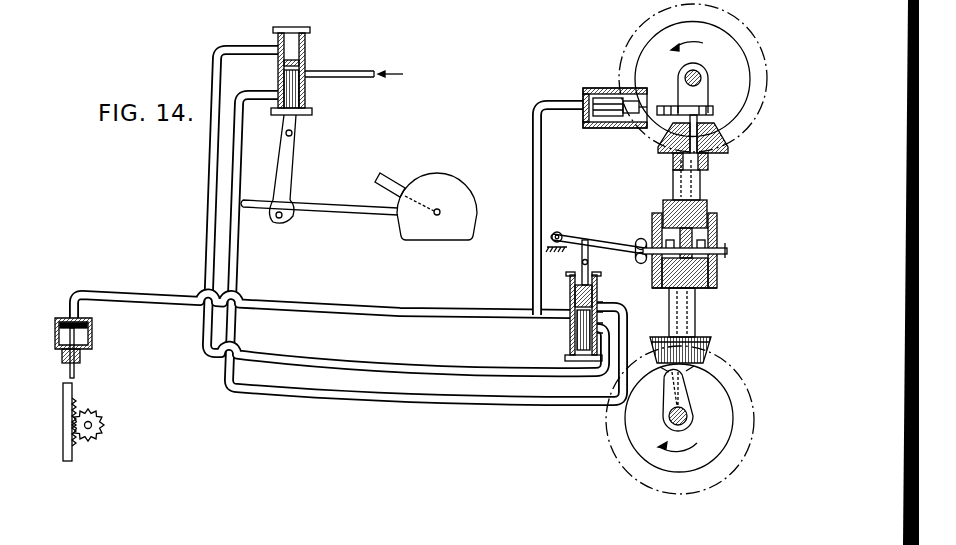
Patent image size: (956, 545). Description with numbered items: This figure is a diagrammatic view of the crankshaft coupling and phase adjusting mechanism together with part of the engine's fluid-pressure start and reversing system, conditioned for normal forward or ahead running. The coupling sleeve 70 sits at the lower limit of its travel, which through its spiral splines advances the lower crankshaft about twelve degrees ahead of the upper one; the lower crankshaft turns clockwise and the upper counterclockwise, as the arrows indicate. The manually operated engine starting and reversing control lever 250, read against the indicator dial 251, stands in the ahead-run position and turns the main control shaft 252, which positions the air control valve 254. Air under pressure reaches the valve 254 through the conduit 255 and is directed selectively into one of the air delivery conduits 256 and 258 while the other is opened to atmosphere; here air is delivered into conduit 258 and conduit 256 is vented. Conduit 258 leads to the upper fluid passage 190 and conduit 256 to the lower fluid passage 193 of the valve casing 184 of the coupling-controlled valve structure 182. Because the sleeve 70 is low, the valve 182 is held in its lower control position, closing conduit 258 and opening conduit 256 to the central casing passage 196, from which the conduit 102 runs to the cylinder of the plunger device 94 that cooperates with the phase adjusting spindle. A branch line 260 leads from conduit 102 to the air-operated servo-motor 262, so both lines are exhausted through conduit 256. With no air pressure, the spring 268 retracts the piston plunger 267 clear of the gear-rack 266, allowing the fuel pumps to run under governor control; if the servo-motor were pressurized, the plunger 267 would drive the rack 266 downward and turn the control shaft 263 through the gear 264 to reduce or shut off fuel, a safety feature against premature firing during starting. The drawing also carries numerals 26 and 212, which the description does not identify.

The governor assembly 26 is at (717, 295).
The coupling sleeve 70 is at (718, 234).
The device 94 is at (606, 129).
The conduit 102 is at (543, 181).
The valve structure 182 is at (572, 299).
The valve casing 184 is at (597, 288).
The fluid passage 190 is at (600, 304).
The fluid passage 193 is at (599, 328).
The central casing passage 196 is at (577, 317).
The lever 212 is at (613, 246).
The engine starting and reversing control lever 250 is at (389, 172).
The indicator dial 251 is at (458, 180).
The main control shaft 252 is at (343, 213).
The air control valve 254 is at (305, 49).
The conduit 255 is at (340, 80).
The air delivery conduit 256 is at (231, 45).
The air delivery conduit 258 is at (246, 90).
The branch line 260 is at (429, 316).
The air-operated servo-motor 262 is at (93, 337).
The control shaft 263 is at (93, 423).
The gear 264 is at (104, 435).
The gear-rack 266 is at (78, 400).
The piston plunger 267 is at (79, 373).
The spring 268 is at (66, 340).